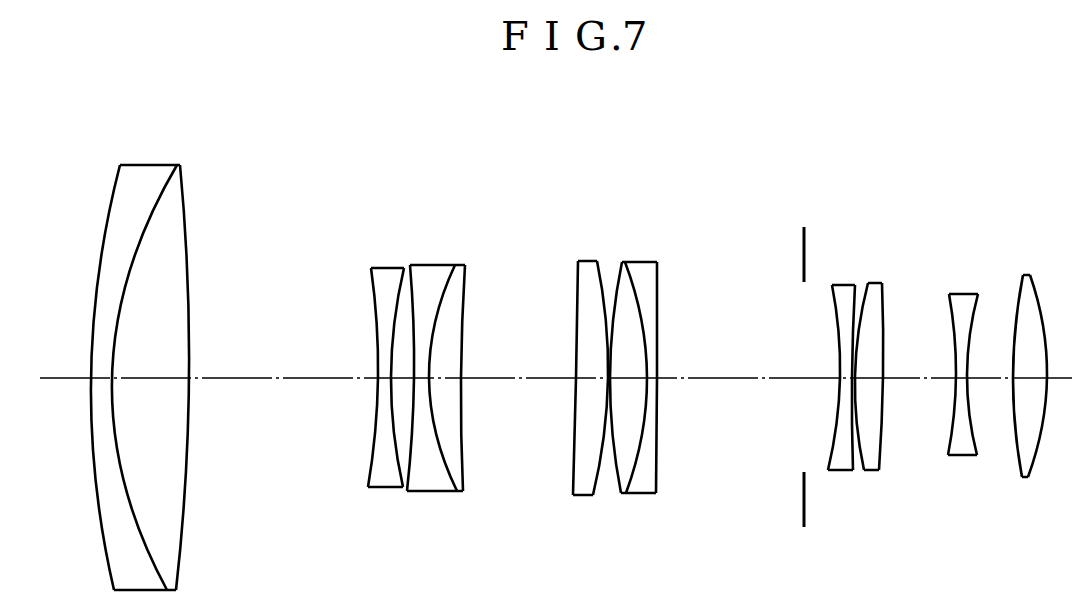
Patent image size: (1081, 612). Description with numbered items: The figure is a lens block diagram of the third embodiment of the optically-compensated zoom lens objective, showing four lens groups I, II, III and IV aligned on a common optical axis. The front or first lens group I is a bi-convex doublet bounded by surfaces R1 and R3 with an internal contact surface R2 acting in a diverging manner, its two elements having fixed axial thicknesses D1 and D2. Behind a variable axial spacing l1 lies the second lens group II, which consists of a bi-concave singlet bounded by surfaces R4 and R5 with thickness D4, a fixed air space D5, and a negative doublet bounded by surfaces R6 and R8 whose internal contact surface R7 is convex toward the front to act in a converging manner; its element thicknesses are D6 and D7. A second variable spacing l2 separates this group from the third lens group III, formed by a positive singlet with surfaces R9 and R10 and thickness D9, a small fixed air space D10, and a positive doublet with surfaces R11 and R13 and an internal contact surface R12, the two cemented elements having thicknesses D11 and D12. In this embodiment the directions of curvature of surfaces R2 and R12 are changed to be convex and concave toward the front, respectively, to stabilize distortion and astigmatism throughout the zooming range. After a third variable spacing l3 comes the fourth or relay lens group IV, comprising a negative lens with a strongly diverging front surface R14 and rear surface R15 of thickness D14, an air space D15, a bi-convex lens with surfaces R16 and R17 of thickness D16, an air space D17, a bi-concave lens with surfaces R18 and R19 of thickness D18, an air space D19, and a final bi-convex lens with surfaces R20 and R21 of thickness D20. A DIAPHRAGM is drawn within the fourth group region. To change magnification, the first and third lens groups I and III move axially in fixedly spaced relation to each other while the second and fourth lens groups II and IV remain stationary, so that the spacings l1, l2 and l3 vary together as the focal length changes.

The first lens group I is at (210, 115).
The second lens group II is at (503, 135).
The third lens group III is at (708, 135).
The fourth lens group IV is at (1047, 133).
The radius of curvature R1 is at (113, 188).
The internal contact surface R2 is at (158, 188).
The radius of curvature R3 is at (185, 188).
The radius of curvature R4 is at (370, 272).
The radius of curvature R5 is at (402, 268).
The radius of curvature R6 is at (420, 265).
The internal contact surface R7 is at (445, 265).
The radius of curvature R8 is at (466, 268).
The radius of curvature R9 is at (578, 266).
The radius of curvature R10 is at (598, 263).
The radius of curvature R11 is at (622, 262).
The internal contact surface R12 is at (628, 262).
The radius of curvature R13 is at (658, 263).
The front surface R14 is at (832, 285).
The radius of curvature R15 is at (856, 285).
The radius of curvature R16 is at (868, 283).
The radius of curvature R17 is at (884, 283).
The radius of curvature R18 is at (949, 293).
The radius of curvature R19 is at (978, 293).
The radius of curvature R20 is at (1023, 275).
The radius of curvature R21 is at (1031, 275).
The fixed axial separation D1 is at (100, 383).
The fixed axial separation D2 is at (155, 383).
The fixed axial separation D4 is at (383, 385).
The fixed axial separation D5 is at (402, 385).
The fixed axial separation D6 is at (422, 385).
The fixed axial separation D7 is at (443, 385).
The fixed axial separation D9 is at (593, 385).
The fixed axial separation D10 is at (608, 385).
The fixed axial separation D11 is at (625, 385).
The fixed axial separation D12 is at (648, 385).
The fixed axial separation D14 is at (842, 385).
The fixed axial separation D15 is at (856, 385).
The fixed axial separation D16 is at (869, 385).
The fixed axial separation D17 is at (907, 385).
The fixed axial separation D18 is at (962, 385).
The fixed axial separation D19 is at (990, 385).
The fixed axial separation D20 is at (1030, 385).
The variable axial spacing l1 is at (282, 380).
The variable axial spacing l2 is at (517, 380).
The variable axial spacing l3 is at (746, 380).
The diaphragm DIAPHRAGM is at (803, 505).